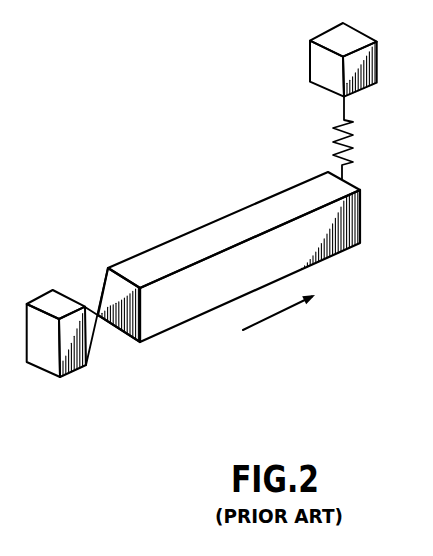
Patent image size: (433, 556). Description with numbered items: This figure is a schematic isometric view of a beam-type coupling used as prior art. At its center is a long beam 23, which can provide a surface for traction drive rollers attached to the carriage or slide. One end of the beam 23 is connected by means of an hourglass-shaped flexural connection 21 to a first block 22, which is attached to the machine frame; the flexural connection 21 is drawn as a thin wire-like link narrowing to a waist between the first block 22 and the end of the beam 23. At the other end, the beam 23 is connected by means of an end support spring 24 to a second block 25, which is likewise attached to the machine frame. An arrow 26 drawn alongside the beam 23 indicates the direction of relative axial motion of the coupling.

The hourglass-shaped flexural connection 21 is at (92, 303).
The first block 22 is at (45, 341).
The beam 23 is at (278, 192).
The end support spring 24 is at (330, 143).
The second block 25 is at (309, 58).
The arrow 26 is at (272, 313).